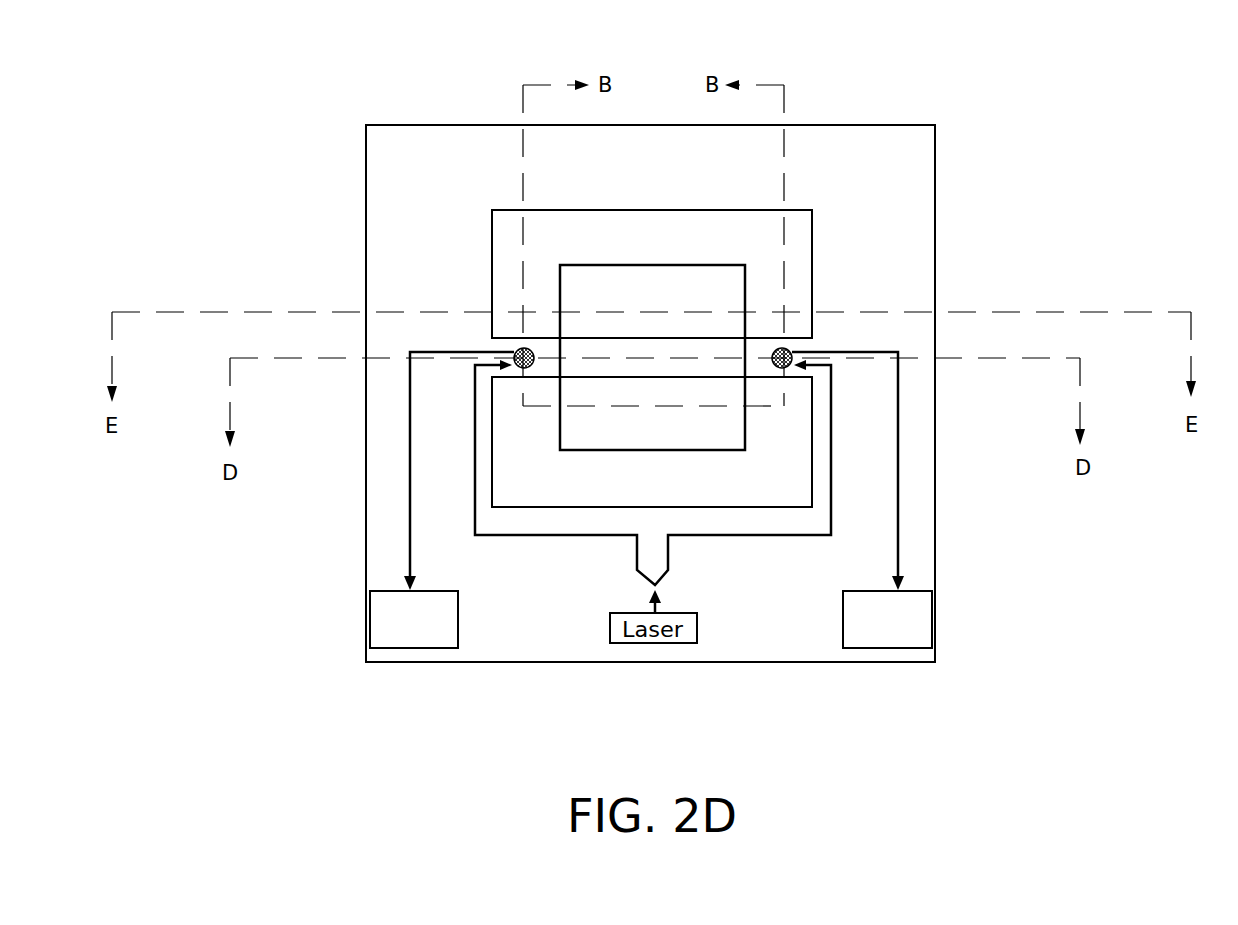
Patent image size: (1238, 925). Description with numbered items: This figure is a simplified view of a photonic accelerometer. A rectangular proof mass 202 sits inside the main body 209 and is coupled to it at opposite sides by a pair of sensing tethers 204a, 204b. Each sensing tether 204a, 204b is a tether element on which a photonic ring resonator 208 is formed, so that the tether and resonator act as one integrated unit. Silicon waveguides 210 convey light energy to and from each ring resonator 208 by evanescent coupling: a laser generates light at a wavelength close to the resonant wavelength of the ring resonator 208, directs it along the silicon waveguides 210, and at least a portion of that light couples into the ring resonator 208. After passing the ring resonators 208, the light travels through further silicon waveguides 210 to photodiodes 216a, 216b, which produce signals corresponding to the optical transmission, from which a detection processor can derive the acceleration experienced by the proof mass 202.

The proof mass 202 is at (652, 357).
The sensing tether 204a is at (538, 347).
The sensing tether 204b is at (771, 372).
The photonic ring resonator 208 is at (873, 80).
The main body 209 is at (372, 239).
The silicon waveguide 210 is at (985, 525).
The photodiode 216a is at (380, 618).
The photodiode 216b is at (932, 632).